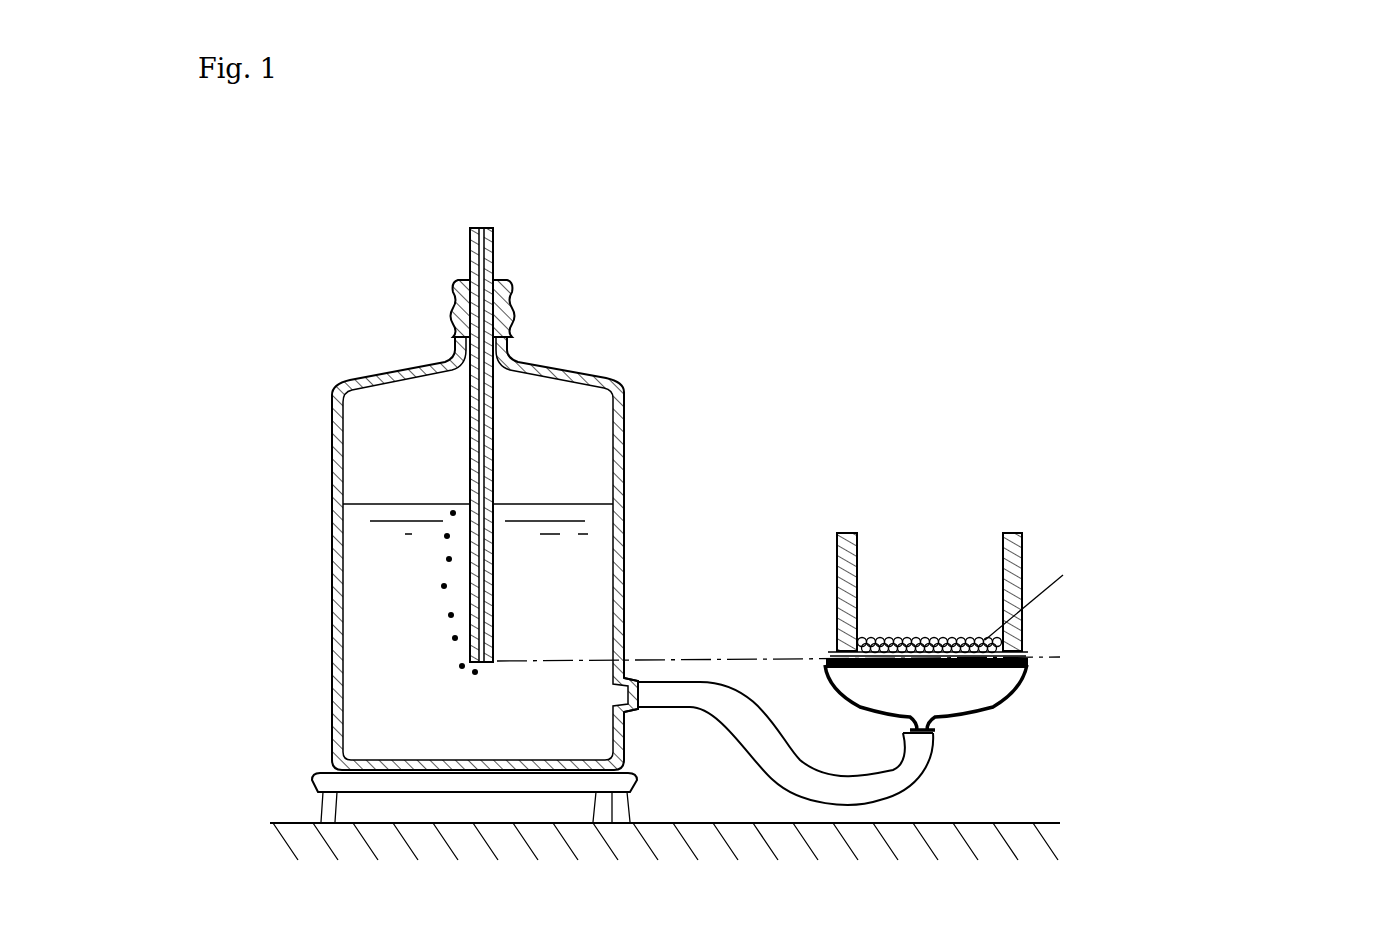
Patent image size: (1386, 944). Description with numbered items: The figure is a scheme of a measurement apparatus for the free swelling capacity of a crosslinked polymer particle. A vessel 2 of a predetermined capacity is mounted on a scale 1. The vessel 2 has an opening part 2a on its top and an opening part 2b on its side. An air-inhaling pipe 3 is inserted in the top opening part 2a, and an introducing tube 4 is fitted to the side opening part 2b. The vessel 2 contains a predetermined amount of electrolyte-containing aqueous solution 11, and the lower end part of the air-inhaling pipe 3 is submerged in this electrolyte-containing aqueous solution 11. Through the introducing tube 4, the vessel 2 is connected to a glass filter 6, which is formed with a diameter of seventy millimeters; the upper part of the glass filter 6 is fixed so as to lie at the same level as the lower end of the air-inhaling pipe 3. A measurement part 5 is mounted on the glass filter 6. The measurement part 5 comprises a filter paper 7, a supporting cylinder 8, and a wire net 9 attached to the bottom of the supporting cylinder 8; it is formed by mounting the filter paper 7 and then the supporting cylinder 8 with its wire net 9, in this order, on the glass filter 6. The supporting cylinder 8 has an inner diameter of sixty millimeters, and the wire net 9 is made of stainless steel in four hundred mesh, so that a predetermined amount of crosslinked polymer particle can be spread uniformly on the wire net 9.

The scale 1 is at (470, 823).
The vessel 2 is at (627, 432).
The opening part 2a is at (508, 305).
The opening part 2b is at (630, 683).
The air-inhaling pipe 3 is at (493, 248).
The introducing tube 4 is at (735, 722).
The measurement part 5 is at (1017, 518).
The glass filter 6 is at (998, 672).
The filter paper 7 is at (1022, 652).
The supporting cylinder 8 is at (838, 566).
The wire net 9 is at (840, 637).
The electrolyte-containing aqueous solution 11 is at (380, 598).